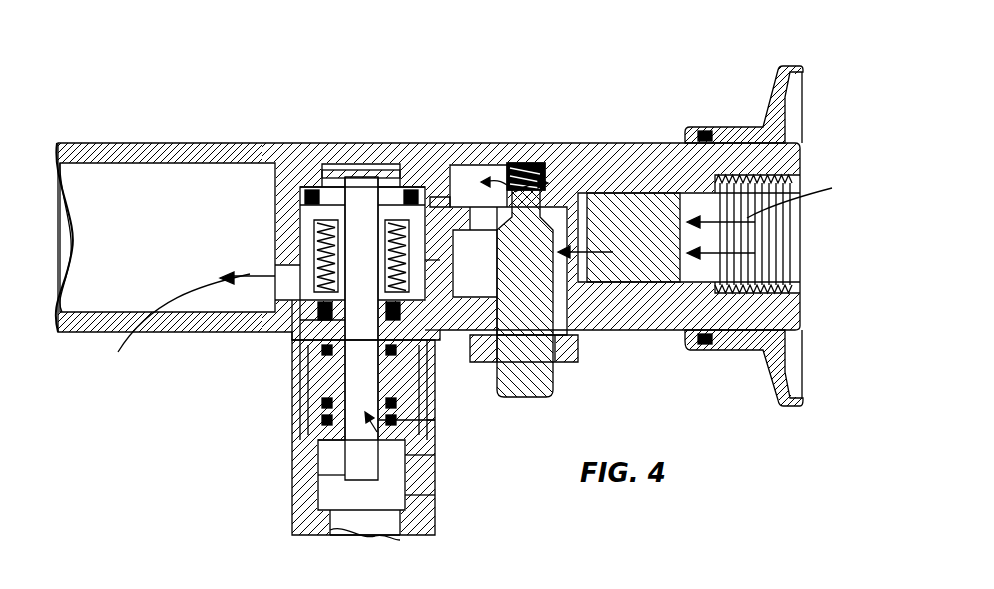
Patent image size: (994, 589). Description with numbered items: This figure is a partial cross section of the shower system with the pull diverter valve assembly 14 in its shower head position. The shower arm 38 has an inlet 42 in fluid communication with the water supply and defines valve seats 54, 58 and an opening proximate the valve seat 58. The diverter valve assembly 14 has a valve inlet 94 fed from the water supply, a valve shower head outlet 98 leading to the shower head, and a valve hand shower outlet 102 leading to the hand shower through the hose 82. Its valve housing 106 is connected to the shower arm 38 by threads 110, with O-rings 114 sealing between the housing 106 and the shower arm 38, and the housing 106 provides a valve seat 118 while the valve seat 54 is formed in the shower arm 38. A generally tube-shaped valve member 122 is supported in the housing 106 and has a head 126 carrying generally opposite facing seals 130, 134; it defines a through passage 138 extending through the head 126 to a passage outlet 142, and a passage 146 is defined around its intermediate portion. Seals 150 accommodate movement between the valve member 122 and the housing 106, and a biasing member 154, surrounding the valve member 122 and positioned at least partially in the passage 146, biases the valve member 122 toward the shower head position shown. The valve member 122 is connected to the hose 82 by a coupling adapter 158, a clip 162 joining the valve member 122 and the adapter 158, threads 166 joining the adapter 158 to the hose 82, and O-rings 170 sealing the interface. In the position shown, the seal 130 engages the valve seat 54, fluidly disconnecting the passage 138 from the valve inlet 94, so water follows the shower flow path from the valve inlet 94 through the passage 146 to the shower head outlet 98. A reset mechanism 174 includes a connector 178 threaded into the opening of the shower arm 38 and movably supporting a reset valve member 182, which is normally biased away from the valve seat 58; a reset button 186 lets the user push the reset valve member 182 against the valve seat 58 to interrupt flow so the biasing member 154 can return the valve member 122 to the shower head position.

The pull diverter valve assembly 14 is at (218, 493).
The shower arm 38 is at (108, 144).
The inlet 42 is at (831, 102).
The valve seat 54 is at (321, 189).
The valve seat 58 is at (542, 210).
The hose 82 is at (400, 543).
The valve inlet 94 is at (456, 201).
The valve shower head outlet 98 is at (262, 293).
The valve hand shower outlet 102 is at (277, 343).
The valve housing 106 is at (437, 341).
The threads 110 is at (428, 272).
The O-rings 114 is at (268, 340).
The valve seat 118 is at (303, 212).
The valve member 122 is at (298, 340).
The head 126 is at (385, 187).
The seal 130 is at (403, 190).
The seal 134 is at (415, 219).
The through passage 138 is at (423, 462).
The passage outlet 142 is at (322, 462).
The passage 146 is at (488, 180).
The seals 150 is at (295, 370).
The biasing member 154 is at (346, 176).
The coupling adapter 158 is at (440, 425).
The clip 162 is at (324, 455).
The threads 166 is at (433, 500).
The O-rings 170 is at (419, 419).
The reset mechanism 174 is at (539, 426).
The connector 178 is at (578, 355).
The reset valve member 182 is at (550, 210).
The reset button 186 is at (548, 396).